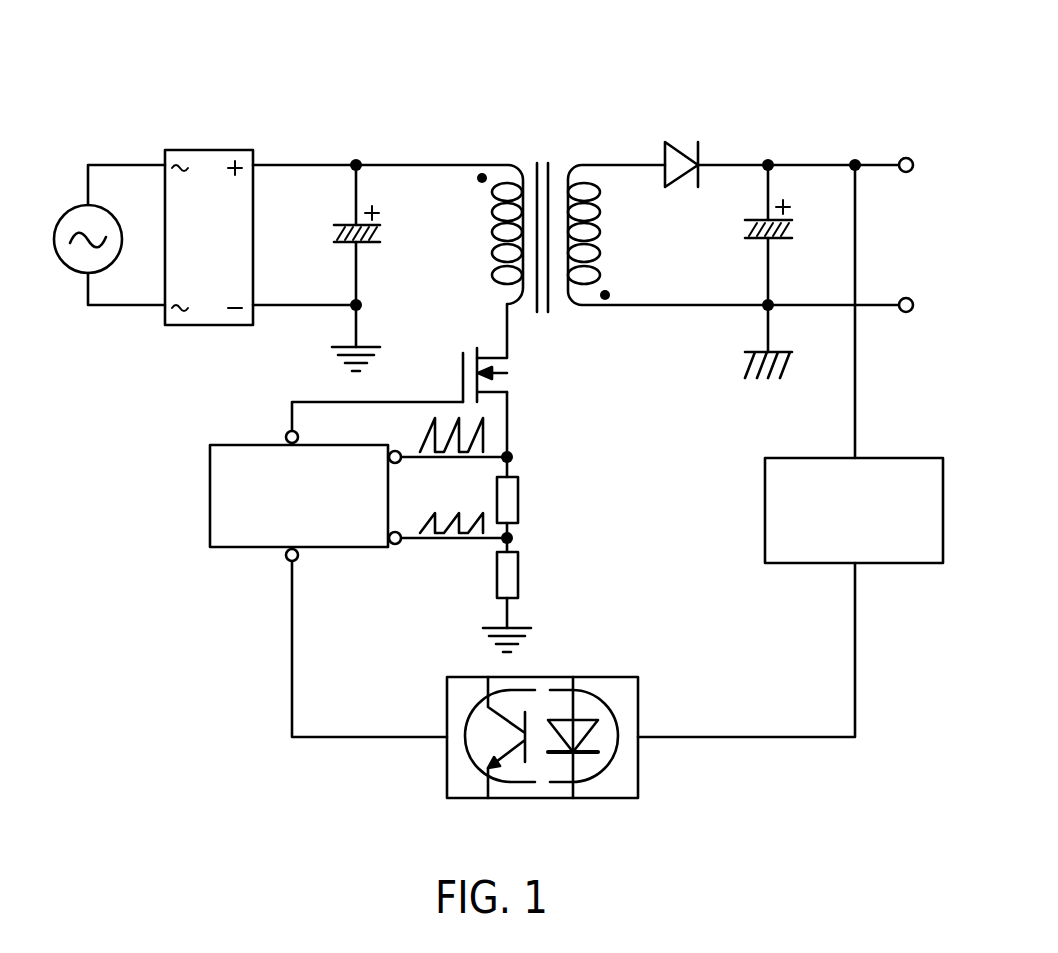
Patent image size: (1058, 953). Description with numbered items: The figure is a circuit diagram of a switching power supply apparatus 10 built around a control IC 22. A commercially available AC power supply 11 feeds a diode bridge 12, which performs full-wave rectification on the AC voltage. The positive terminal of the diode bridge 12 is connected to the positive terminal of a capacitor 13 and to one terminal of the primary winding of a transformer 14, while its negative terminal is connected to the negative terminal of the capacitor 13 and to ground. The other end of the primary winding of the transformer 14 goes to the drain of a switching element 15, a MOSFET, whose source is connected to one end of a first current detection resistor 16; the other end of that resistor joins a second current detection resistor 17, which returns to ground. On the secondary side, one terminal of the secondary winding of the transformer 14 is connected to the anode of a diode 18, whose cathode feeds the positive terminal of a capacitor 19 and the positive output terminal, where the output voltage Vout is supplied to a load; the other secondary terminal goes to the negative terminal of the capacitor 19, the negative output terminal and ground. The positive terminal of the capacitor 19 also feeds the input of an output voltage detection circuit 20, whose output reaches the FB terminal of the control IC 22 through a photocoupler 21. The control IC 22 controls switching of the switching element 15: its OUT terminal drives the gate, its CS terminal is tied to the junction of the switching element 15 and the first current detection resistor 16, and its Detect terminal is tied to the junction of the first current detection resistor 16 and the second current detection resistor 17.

The switching power supply apparatus 10 is at (625, 72).
The AC power supply 11 is at (70, 203).
The diode bridge 12 is at (210, 148).
The capacitor 13 is at (383, 231).
The transformer 14 is at (541, 160).
The switching element 15 is at (512, 371).
The first current detection resistor 16 is at (519, 503).
The second current detection resistor 17 is at (519, 578).
The diode 18 is at (688, 140).
The capacitor 19 is at (741, 230).
The output voltage detection circuit 20 is at (909, 456).
The photocoupler 21 is at (627, 675).
The control IC 22 is at (208, 490).